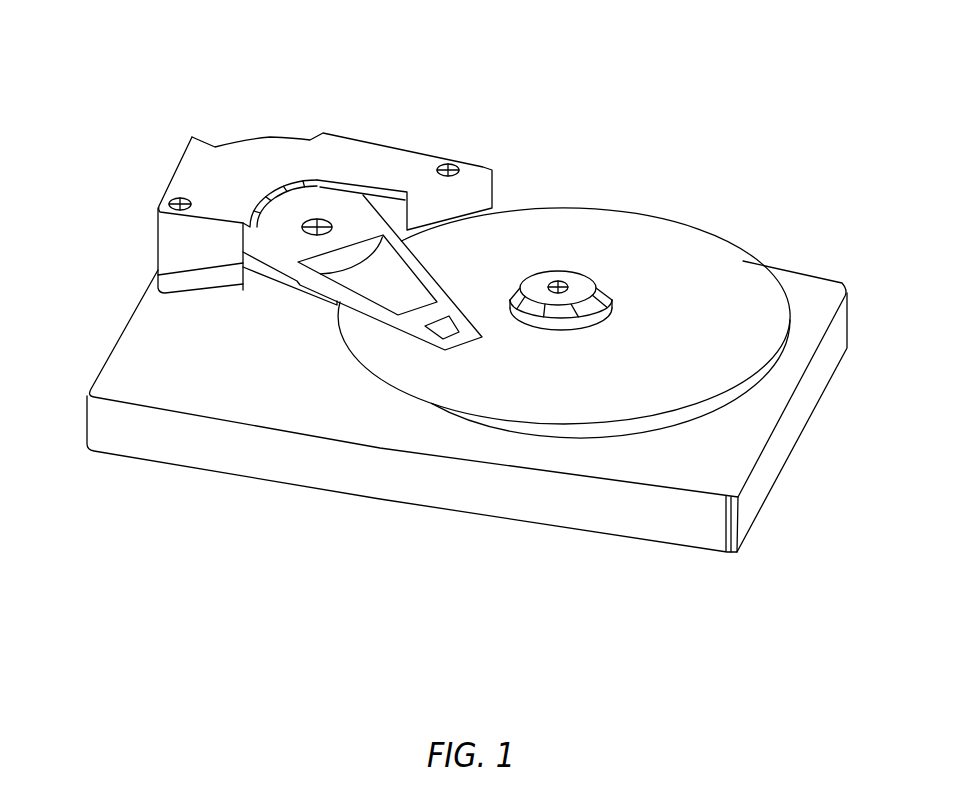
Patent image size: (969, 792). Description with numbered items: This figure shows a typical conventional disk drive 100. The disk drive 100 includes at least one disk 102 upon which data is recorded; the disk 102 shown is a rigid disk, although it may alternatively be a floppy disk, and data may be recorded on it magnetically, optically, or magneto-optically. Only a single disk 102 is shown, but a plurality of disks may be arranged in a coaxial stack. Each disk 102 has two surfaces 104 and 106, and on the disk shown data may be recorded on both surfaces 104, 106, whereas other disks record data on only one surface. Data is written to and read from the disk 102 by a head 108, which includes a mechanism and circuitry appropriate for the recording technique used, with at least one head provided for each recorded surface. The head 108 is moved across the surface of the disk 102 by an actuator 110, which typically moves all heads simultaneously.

The disk drive 100 is at (475, 338).
The disk 102 is at (610, 275).
The surface 104 is at (727, 278).
The surface 106 is at (720, 397).
The head 108 is at (440, 328).
The actuator 110 is at (269, 238).